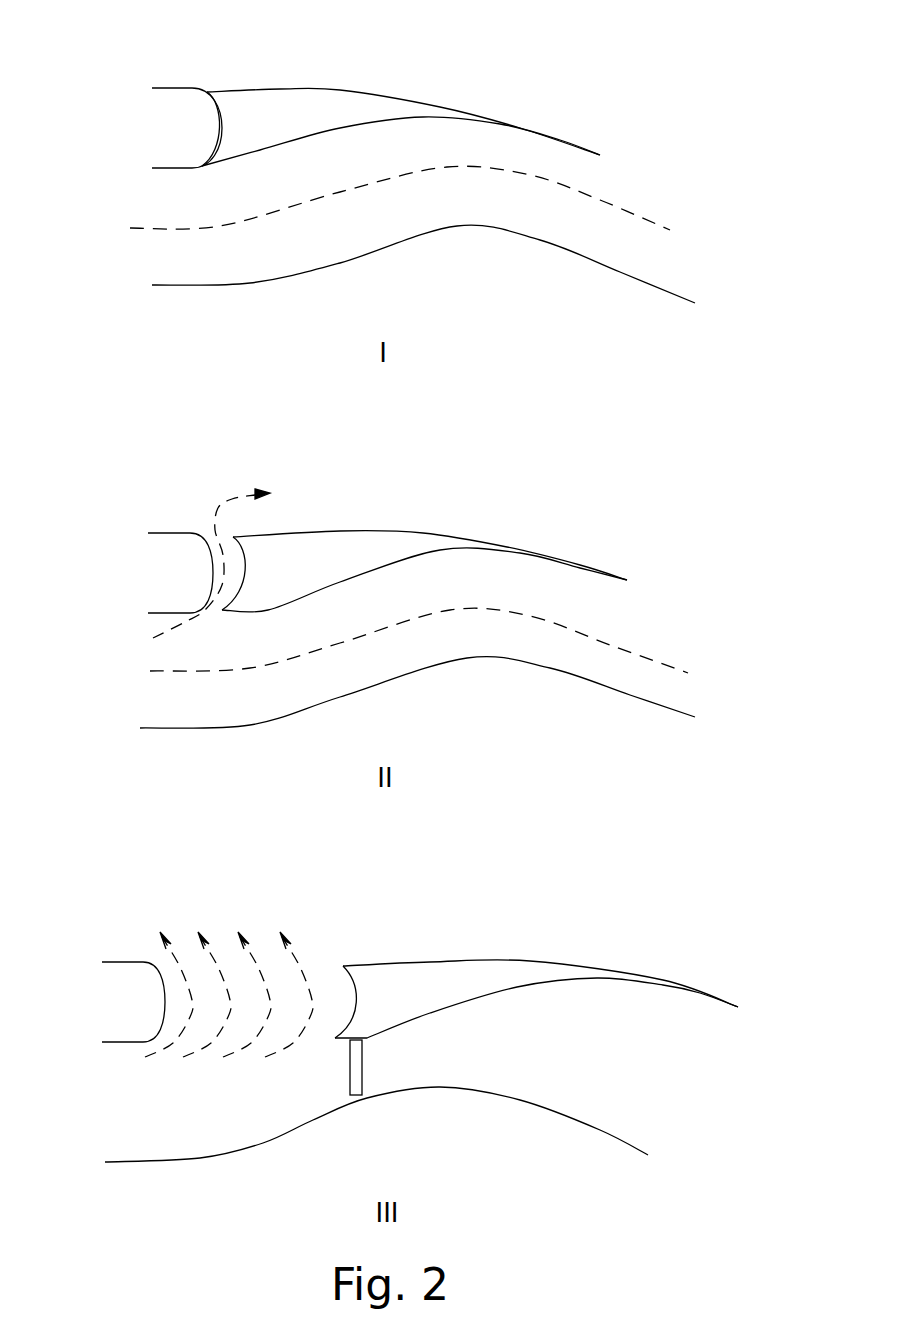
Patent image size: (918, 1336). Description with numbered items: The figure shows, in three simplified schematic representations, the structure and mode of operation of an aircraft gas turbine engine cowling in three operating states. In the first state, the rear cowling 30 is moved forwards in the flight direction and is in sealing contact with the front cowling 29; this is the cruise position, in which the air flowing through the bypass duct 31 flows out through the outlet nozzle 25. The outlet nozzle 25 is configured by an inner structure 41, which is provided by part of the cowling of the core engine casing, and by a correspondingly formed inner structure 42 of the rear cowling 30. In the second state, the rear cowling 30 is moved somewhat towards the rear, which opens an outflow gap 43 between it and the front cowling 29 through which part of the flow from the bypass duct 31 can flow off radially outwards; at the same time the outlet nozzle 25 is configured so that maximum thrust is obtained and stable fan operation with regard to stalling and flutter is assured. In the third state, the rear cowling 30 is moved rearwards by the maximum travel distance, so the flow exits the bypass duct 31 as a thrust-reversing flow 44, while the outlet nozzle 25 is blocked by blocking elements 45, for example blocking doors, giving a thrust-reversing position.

The outlet nozzle 25 is at (588, 175).
The front cowling 29 is at (170, 127).
The rear cowling 30 is at (365, 103).
The bypass duct 31 is at (170, 197).
The inner structure 41 is at (585, 255).
The inner structure of the rear cowling 42 is at (475, 120).
The outflow gap 43 is at (235, 573).
The thrust-reversing flow 44 is at (297, 977).
The blocking elements 45 is at (357, 1053).